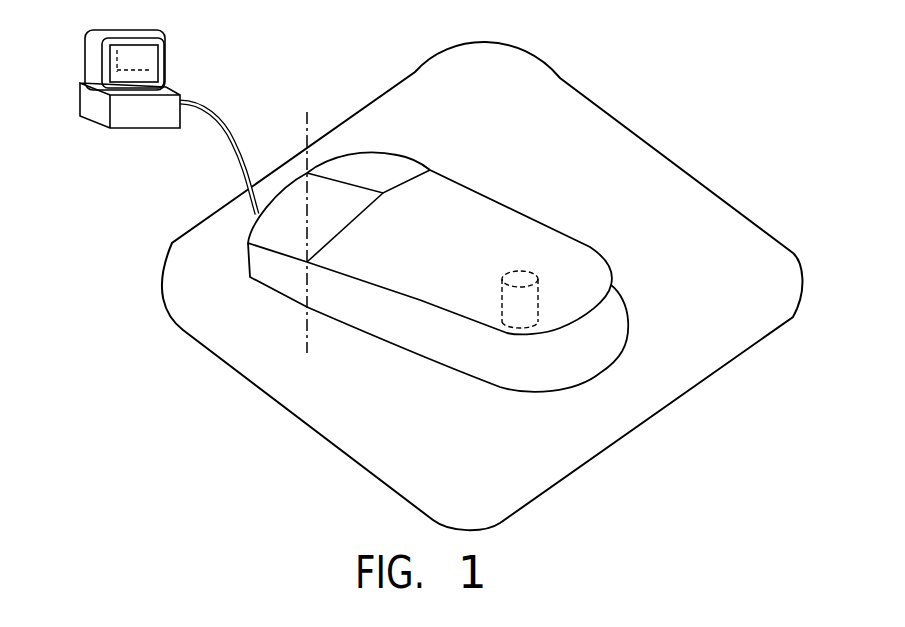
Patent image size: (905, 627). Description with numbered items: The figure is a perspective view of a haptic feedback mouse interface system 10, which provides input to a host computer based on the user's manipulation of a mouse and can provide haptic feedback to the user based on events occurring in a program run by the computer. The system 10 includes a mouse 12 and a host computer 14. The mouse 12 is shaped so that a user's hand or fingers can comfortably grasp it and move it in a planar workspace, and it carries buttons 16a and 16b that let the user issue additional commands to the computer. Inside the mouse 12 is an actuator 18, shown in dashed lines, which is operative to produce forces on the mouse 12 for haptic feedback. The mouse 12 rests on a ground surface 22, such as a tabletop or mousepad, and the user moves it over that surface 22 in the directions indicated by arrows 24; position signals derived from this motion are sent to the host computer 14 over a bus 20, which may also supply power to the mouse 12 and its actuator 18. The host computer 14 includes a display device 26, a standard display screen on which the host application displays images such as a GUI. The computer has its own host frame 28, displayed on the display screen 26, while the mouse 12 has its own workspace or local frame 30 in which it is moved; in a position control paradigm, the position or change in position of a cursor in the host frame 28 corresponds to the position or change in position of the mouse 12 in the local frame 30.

The haptic feedback mouse interface system 10 is at (624, 47).
The mouse 12 is at (560, 203).
The host computer 14 is at (117, 117).
The button 16a is at (291, 196).
The button 16b is at (365, 163).
The actuator 18 is at (533, 313).
The bus 20 is at (214, 108).
The ground surface 22 is at (510, 477).
The arrows 24 is at (233, 235).
The display device 26 is at (135, 47).
The host frame 28 is at (110, 70).
The local frame 30 is at (452, 428).